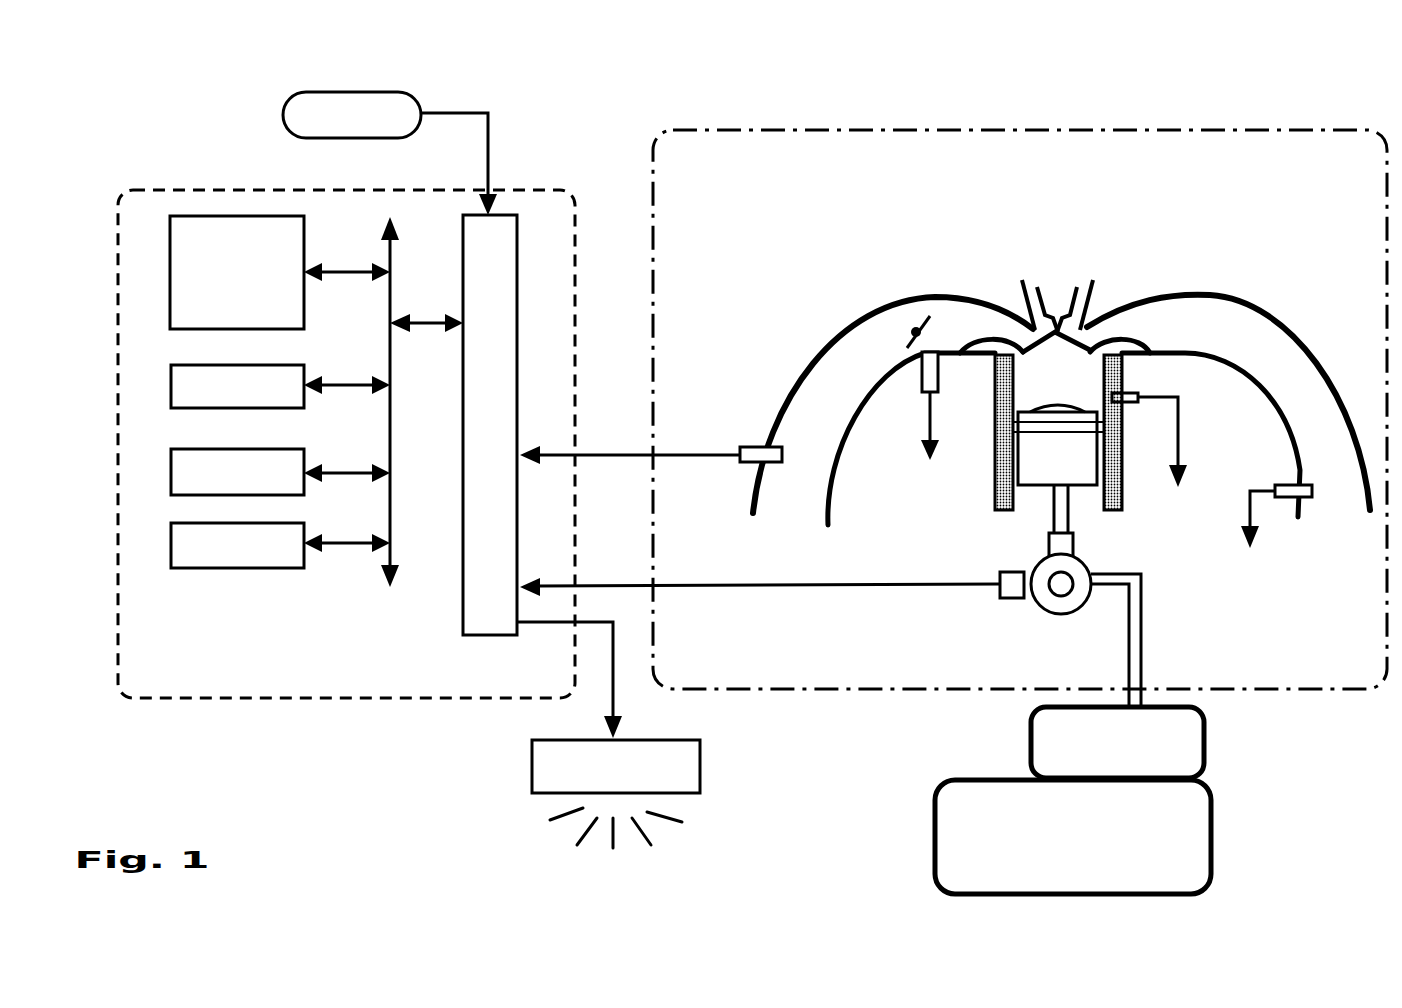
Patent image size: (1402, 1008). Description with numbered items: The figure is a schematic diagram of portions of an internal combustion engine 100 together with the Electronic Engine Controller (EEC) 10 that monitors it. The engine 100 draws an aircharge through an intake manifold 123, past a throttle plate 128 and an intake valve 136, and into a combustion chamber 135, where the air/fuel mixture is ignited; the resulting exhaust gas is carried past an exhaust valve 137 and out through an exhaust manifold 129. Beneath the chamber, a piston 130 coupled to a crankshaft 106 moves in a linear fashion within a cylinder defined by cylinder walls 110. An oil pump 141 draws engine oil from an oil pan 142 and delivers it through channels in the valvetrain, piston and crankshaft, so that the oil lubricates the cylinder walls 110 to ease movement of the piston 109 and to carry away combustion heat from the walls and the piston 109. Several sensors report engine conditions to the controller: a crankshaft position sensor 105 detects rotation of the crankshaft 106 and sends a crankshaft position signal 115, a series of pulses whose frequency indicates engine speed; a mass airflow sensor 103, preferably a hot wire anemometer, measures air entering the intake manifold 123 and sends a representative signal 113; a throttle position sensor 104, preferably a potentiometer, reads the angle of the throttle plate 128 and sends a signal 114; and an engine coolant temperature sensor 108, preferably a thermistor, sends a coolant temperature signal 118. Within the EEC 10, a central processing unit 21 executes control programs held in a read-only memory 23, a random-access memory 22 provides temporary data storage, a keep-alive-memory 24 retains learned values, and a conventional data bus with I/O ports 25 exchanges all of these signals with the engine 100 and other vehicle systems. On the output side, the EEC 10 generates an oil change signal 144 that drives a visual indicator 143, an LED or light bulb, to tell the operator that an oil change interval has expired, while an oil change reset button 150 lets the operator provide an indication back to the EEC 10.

The electronic engine controller 10 is at (118, 306).
The central processing unit 21 is at (170, 260).
The random-access memory 22 is at (171, 383).
The read-only memory 23 is at (171, 468).
The keep-alive-memory 24 is at (171, 548).
The I/O ports 25 is at (520, 413).
The oil change reset button 150 is at (284, 100).
The internal combustion engine 100 is at (720, 128).
The mass airflow sensor 103 is at (782, 457).
The mass airflow signal 113 is at (740, 452).
The throttle plate 128 is at (916, 306).
The intake manifold 123 is at (870, 362).
The throttle position sensor 104 is at (921, 372).
The throttle position signal 114 is at (935, 414).
The intake valve 136 is at (1022, 300).
The exhaust valve 137 is at (1088, 302).
The combustion chamber 135 is at (1033, 390).
The exhaust manifold 129 is at (1237, 342).
The engine coolant temperature sensor 108 is at (1133, 400).
The engine coolant temperature signal 118 is at (1183, 398).
The piston 109 is at (1313, 493).
The cylinder walls 110 is at (1030, 487).
The piston 130 is at (1043, 486).
The crankshaft position sensor 105 is at (1012, 570).
The crankshaft 106 is at (1088, 568).
The crankshaft position signal 115 is at (965, 588).
The oil pump 141 is at (1204, 765).
The oil pan 142 is at (1211, 860).
The visual indicator 143 is at (700, 750).
The oil change signal 144 is at (615, 660).